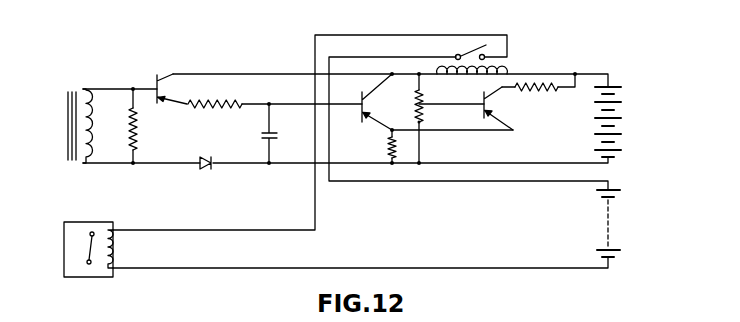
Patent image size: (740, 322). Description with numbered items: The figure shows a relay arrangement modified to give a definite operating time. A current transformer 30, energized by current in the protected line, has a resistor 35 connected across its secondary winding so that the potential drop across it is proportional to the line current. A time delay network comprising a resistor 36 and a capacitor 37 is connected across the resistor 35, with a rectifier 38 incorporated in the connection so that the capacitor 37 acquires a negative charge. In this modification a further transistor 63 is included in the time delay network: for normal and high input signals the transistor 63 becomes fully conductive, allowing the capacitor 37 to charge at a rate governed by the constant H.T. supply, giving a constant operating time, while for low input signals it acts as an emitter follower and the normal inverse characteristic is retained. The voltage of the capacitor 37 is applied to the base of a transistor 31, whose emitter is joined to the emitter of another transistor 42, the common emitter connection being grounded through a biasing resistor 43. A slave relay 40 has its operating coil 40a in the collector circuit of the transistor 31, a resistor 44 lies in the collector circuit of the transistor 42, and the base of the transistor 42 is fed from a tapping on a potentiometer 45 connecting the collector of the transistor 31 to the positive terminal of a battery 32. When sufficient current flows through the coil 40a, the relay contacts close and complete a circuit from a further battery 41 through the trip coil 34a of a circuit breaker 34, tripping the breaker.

The current transformer 30 is at (83, 186).
The resistor 35 is at (161, 140).
The transistor 63 is at (184, 99).
The resistor 36 is at (228, 99).
The capacitor 37 is at (303, 143).
The rectifier 38 is at (216, 191).
The transistor 31 is at (377, 140).
The potentiometer 45 is at (412, 113).
The biasing resistor 43 is at (416, 159).
The slave relay 40 is at (534, 69).
The operating coil 40a is at (463, 79).
The transistor 42 is at (513, 115).
The resistor 44 is at (552, 115).
The battery 32 is at (644, 130).
The further battery 41 is at (643, 233).
The circuit breaker 34 is at (88, 258).
The circuit breaker trip coil 34a is at (113, 241).